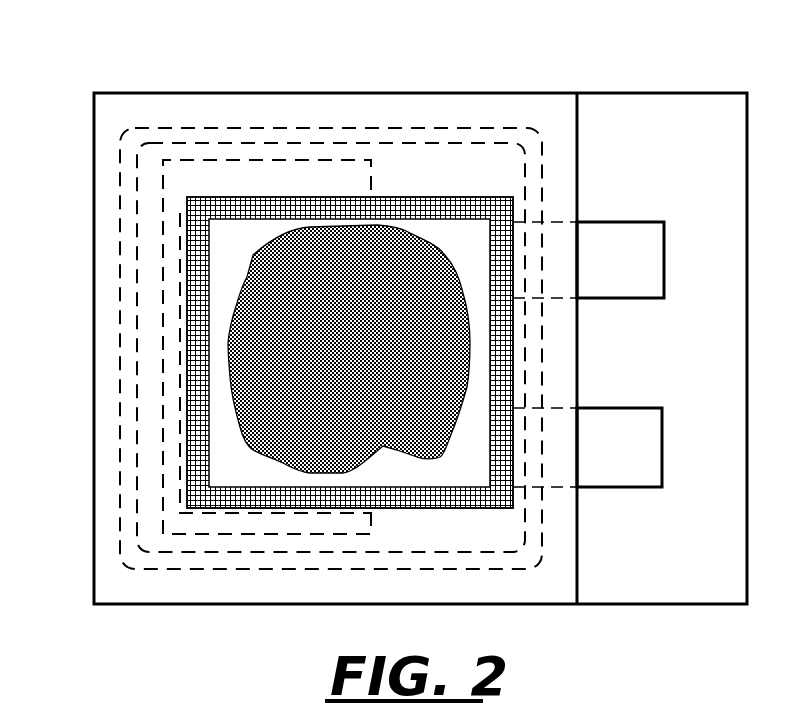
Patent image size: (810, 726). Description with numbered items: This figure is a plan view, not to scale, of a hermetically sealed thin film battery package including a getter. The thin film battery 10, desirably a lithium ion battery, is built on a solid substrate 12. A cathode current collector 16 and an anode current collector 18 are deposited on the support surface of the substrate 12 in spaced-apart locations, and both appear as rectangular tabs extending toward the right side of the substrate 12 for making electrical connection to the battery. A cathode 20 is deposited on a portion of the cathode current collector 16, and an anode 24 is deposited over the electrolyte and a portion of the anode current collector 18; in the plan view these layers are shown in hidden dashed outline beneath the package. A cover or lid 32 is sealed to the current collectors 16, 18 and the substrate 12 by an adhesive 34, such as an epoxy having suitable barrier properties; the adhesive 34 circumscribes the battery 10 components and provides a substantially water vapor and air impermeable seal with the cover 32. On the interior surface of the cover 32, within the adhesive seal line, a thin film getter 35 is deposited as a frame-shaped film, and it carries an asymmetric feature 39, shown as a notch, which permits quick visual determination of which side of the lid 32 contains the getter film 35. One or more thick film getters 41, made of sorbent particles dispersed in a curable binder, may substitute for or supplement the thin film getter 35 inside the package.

The thin film battery 10 is at (250, 160).
The solid substrate 12 is at (697, 152).
The cathode current collector 16 is at (635, 250).
The anode current collector 18 is at (645, 420).
The cathode 20 is at (325, 185).
The anode 24 is at (187, 215).
The cover 32 is at (558, 127).
The adhesive 34 is at (405, 137).
The thin film getter 35 is at (233, 327).
The asymmetric feature 39 is at (390, 456).
The thick film getter 41 is at (190, 450).